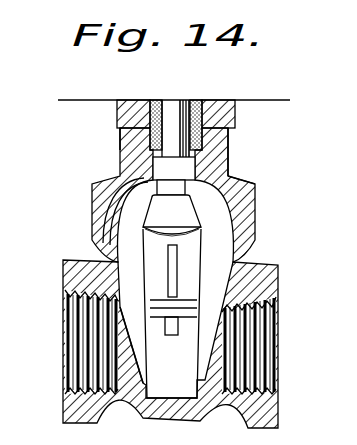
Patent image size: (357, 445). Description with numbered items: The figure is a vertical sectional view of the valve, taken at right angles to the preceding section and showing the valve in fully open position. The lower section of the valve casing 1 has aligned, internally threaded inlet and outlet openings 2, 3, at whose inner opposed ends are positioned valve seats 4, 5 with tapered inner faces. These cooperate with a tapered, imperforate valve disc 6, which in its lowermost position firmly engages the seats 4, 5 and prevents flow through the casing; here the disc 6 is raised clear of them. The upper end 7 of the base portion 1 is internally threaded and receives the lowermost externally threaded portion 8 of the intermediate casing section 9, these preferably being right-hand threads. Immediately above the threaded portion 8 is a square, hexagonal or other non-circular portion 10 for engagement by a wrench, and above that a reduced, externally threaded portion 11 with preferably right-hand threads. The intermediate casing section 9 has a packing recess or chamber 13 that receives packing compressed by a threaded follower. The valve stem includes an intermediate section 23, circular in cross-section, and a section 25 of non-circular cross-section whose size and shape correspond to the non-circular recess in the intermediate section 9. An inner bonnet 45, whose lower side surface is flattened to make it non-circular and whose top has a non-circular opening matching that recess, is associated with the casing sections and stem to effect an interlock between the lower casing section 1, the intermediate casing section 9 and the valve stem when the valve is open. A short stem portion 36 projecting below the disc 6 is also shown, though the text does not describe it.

The lower section of the valve casing 1 is at (270, 283).
The inlet opening 2 is at (65, 343).
The outlet opening 3 is at (280, 350).
The valve seat 4 is at (132, 333).
The valve seat 5 is at (207, 362).
The valve disc 6 is at (177, 271).
The upper end of the base portion 7 is at (254, 222).
The lowermost externally threaded portion 8 is at (247, 188).
The intermediate casing section 9 is at (228, 168).
The non-circular portion 10 is at (120, 158).
The reduced externally-threaded portion 11 is at (140, 115).
The packing recess 13 is at (123, 132).
The intermediate section of the valve stem 23 is at (198, 115).
The non-circular section of the valve stem 25 is at (180, 168).
The plug stem 36 is at (167, 337).
The inner bonnet 45 is at (130, 223).